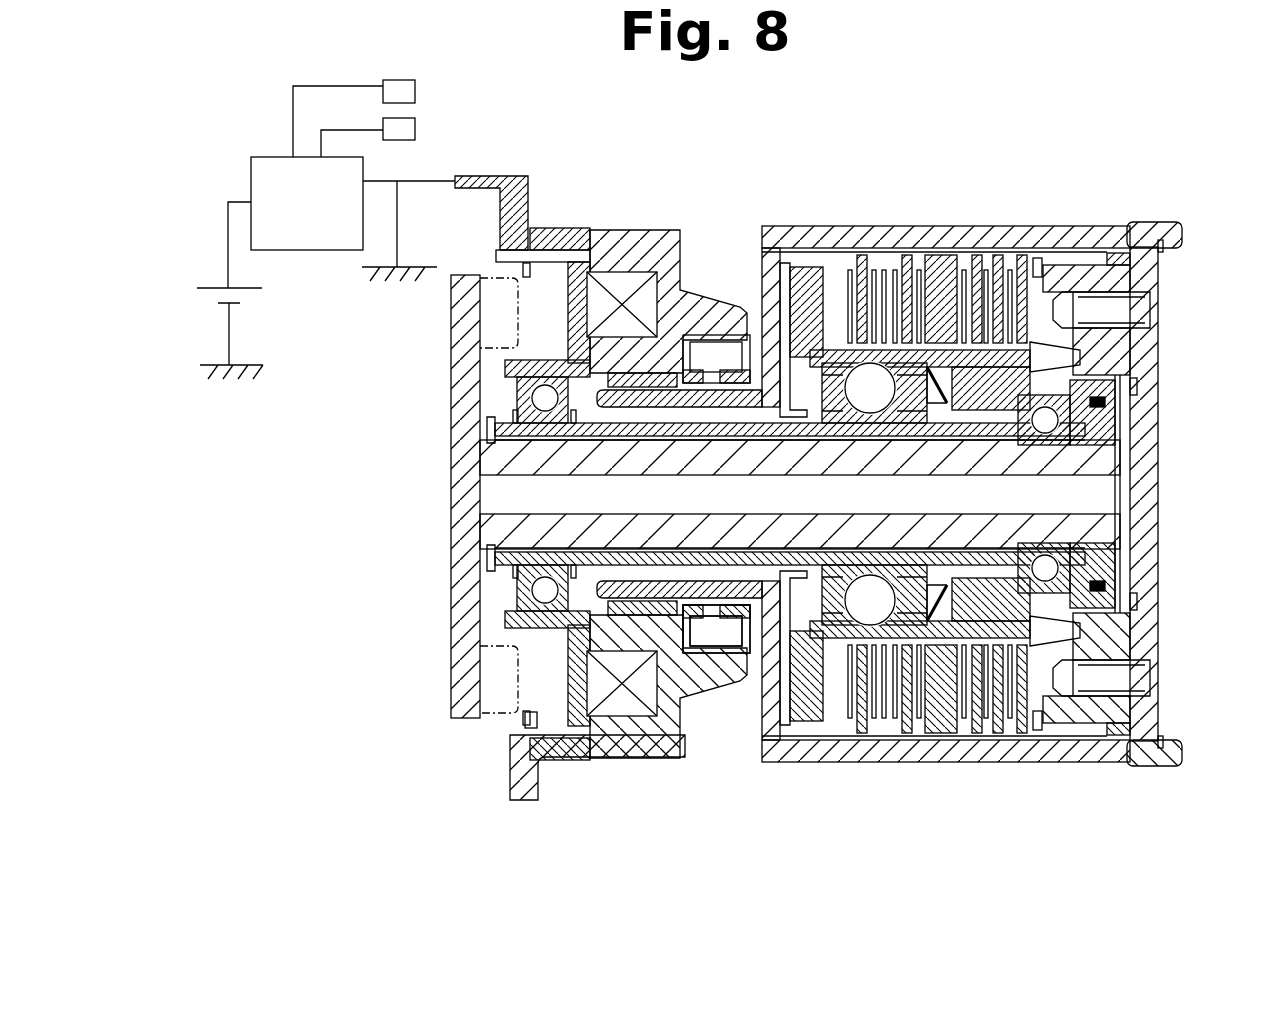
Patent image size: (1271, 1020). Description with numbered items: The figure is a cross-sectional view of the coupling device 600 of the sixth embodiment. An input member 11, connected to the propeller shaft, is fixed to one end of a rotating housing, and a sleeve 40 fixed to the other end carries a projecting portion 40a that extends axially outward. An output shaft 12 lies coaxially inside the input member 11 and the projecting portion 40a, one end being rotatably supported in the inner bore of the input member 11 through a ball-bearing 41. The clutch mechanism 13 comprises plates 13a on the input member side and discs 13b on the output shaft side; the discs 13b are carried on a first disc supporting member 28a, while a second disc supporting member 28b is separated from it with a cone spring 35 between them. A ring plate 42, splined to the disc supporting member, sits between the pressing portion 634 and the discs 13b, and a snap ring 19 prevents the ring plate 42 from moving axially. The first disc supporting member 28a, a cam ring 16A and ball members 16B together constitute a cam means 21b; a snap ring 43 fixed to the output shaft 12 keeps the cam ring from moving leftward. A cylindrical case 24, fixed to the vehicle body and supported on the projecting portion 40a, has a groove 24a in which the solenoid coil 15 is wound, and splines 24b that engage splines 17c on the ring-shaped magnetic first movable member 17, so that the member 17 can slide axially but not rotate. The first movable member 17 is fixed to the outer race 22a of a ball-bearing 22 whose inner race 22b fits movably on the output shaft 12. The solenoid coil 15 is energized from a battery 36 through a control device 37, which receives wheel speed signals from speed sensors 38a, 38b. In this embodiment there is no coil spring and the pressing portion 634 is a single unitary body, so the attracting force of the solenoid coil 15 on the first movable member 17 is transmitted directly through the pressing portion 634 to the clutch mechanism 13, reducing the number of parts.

The input member 11 is at (1164, 340).
The output shaft 12 is at (470, 545).
The clutch mechanism 13 is at (969, 223).
The plates 13a is at (905, 252).
The discs 13b is at (851, 252).
The solenoid coil 15 is at (622, 280).
The cam ring 16A is at (843, 690).
The ball members 16B is at (927, 760).
The first movable member 17 is at (550, 318).
The splines 17c is at (560, 263).
The snap ring 19 is at (795, 293).
The cam means 21b is at (873, 582).
The ball-bearing 22 is at (511, 399).
The outer race 22a is at (503, 378).
The inner race 22b is at (505, 418).
The case 24 is at (522, 212).
The groove 24a is at (647, 710).
The splines 24b is at (512, 727).
The first disc supporting member 28a is at (747, 297).
The second disc supporting member 28b is at (1065, 452).
The cone spring 35 is at (1087, 361).
The battery 36 is at (216, 280).
The control device 37 is at (265, 175).
The speed sensor 38a is at (403, 92).
The speed sensor 38b is at (407, 130).
The sleeve 40 is at (777, 720).
The projecting portion 40a is at (688, 600).
The ball-bearing 41 is at (1082, 559).
The ring plate 42 is at (860, 760).
The snap ring 43 is at (770, 673).
The coupling device 600 is at (946, 457).
The pressing portion 634 is at (768, 307).